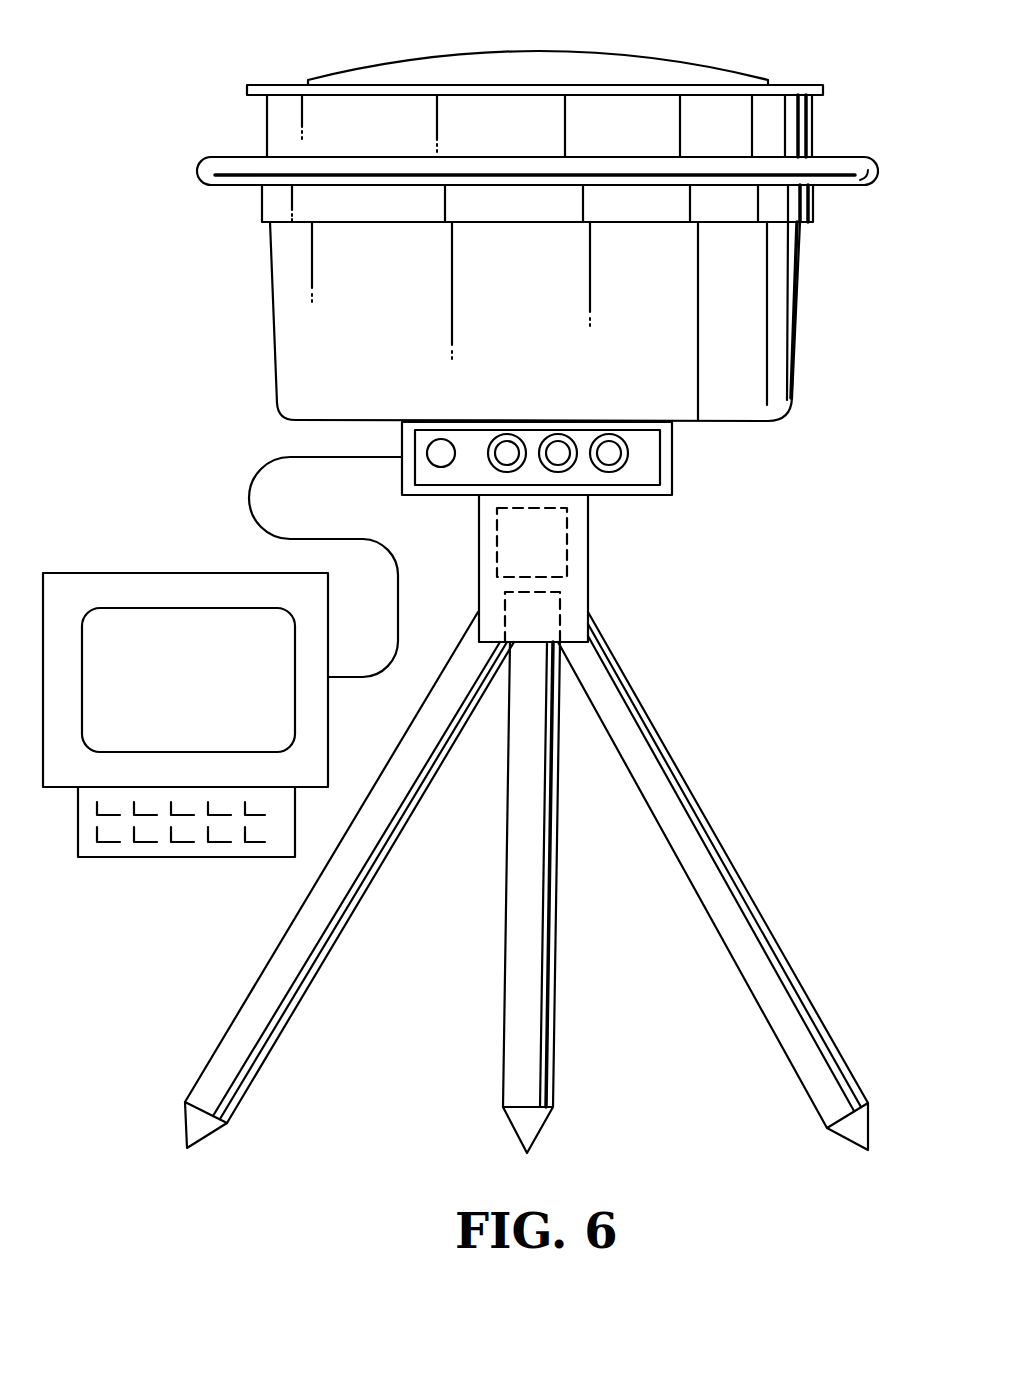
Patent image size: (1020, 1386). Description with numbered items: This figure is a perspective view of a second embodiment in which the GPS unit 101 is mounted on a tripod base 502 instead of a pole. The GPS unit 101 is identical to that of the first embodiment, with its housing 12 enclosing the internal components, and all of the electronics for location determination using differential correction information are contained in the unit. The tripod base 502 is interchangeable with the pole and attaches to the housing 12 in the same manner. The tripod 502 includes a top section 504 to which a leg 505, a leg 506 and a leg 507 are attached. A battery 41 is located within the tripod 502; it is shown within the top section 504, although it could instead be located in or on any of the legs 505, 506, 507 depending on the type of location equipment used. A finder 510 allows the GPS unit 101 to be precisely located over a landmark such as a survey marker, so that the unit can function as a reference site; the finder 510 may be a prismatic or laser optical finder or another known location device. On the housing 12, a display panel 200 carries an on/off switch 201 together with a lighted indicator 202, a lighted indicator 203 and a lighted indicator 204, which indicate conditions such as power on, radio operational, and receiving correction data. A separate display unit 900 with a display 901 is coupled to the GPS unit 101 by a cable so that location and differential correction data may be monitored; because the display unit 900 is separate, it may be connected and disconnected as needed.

The GPS unit 101 is at (682, 39).
The housing 12 is at (546, 309).
The display panel 200 is at (641, 465).
The on/off switch 201 is at (437, 441).
The lighted indicator 202 is at (507, 435).
The lighted indicator 203 is at (557, 435).
The lighted indicator 204 is at (609, 435).
The display unit 900 is at (185, 688).
The display 901 is at (218, 700).
The battery 41 is at (540, 546).
The top section 504 is at (588, 566).
The finder 510 is at (545, 623).
The tripod base 502 is at (524, 882).
The leg 505 is at (252, 990).
The leg 506 is at (503, 1044).
The leg 507 is at (793, 963).